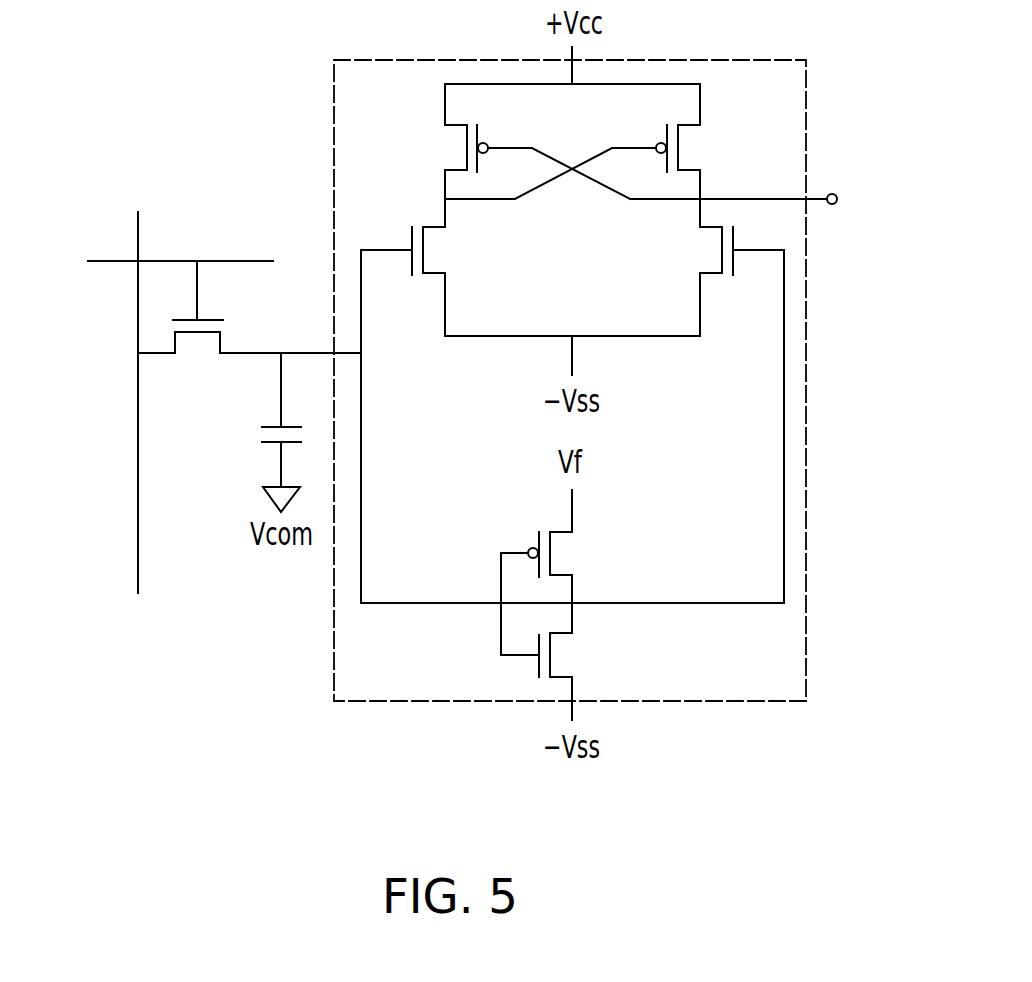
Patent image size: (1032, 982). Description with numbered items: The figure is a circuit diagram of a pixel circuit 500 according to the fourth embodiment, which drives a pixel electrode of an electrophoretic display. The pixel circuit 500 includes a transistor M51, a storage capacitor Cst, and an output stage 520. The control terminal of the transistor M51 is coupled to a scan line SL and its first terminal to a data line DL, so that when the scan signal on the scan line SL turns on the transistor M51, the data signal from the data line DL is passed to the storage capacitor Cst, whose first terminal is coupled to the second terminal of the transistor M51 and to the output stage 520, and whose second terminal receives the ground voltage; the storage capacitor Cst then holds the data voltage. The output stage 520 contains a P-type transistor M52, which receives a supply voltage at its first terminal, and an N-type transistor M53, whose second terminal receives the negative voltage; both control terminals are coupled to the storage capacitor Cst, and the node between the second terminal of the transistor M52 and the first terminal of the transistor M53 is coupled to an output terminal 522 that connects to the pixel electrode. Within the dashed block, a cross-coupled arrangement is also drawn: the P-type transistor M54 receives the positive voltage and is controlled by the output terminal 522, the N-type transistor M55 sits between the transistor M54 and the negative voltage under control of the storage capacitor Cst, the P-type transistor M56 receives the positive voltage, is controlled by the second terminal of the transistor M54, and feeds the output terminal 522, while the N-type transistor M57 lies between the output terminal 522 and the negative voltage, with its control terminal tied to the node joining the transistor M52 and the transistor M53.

The pixel circuit 500 is at (868, 825).
The output stage 520 is at (698, 60).
The output terminal 522 is at (836, 194).
The transistor M51 is at (249, 329).
The transistor M52 is at (561, 593).
The transistor M53 is at (561, 676).
The transistor M54 is at (511, 141).
The transistor M55 is at (428, 267).
The transistor M56 is at (632, 141).
The transistor M57 is at (716, 267).
The storage capacitor Cst is at (257, 432).
The scan line SL is at (112, 258).
The data line DL is at (139, 232).